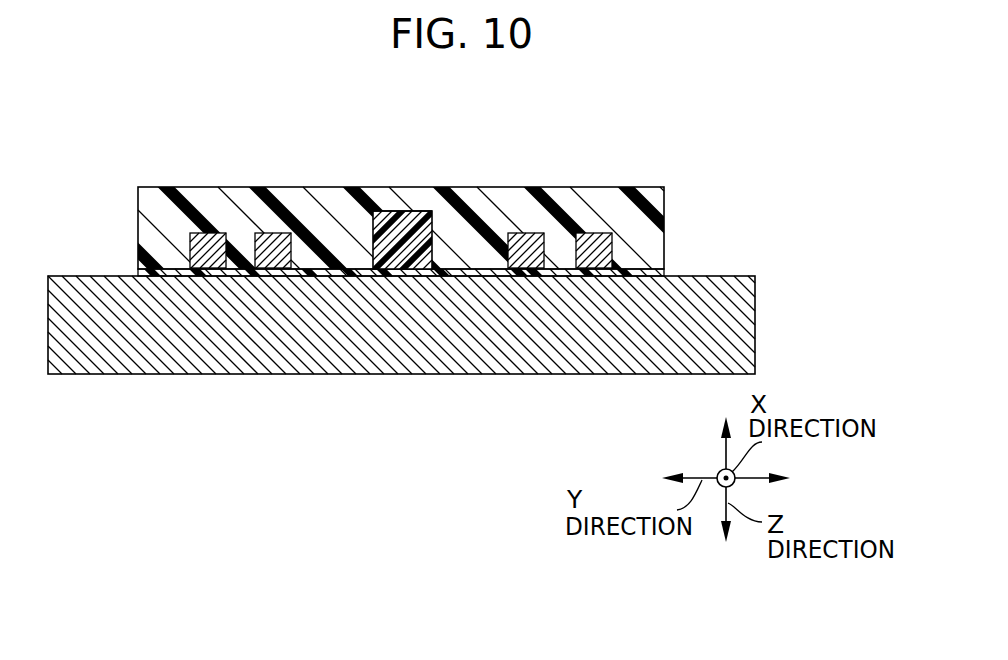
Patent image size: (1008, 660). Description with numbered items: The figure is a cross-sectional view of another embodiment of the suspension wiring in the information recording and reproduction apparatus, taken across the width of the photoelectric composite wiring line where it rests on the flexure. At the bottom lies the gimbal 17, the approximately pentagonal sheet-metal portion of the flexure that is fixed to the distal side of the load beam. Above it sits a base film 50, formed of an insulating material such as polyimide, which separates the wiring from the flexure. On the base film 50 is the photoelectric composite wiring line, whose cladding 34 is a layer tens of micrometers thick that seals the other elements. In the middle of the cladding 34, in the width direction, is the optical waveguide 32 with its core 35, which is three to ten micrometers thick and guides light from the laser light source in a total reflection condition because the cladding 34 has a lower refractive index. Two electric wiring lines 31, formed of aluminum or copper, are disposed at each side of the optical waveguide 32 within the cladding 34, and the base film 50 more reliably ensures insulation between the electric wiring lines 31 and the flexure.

The gimbal 17 is at (505, 353).
The electric wiring line 31 is at (207, 242).
The optical waveguide 32 is at (399, 204).
The cladding 34 is at (515, 203).
The core 35 is at (420, 212).
The base film 50 is at (333, 277).